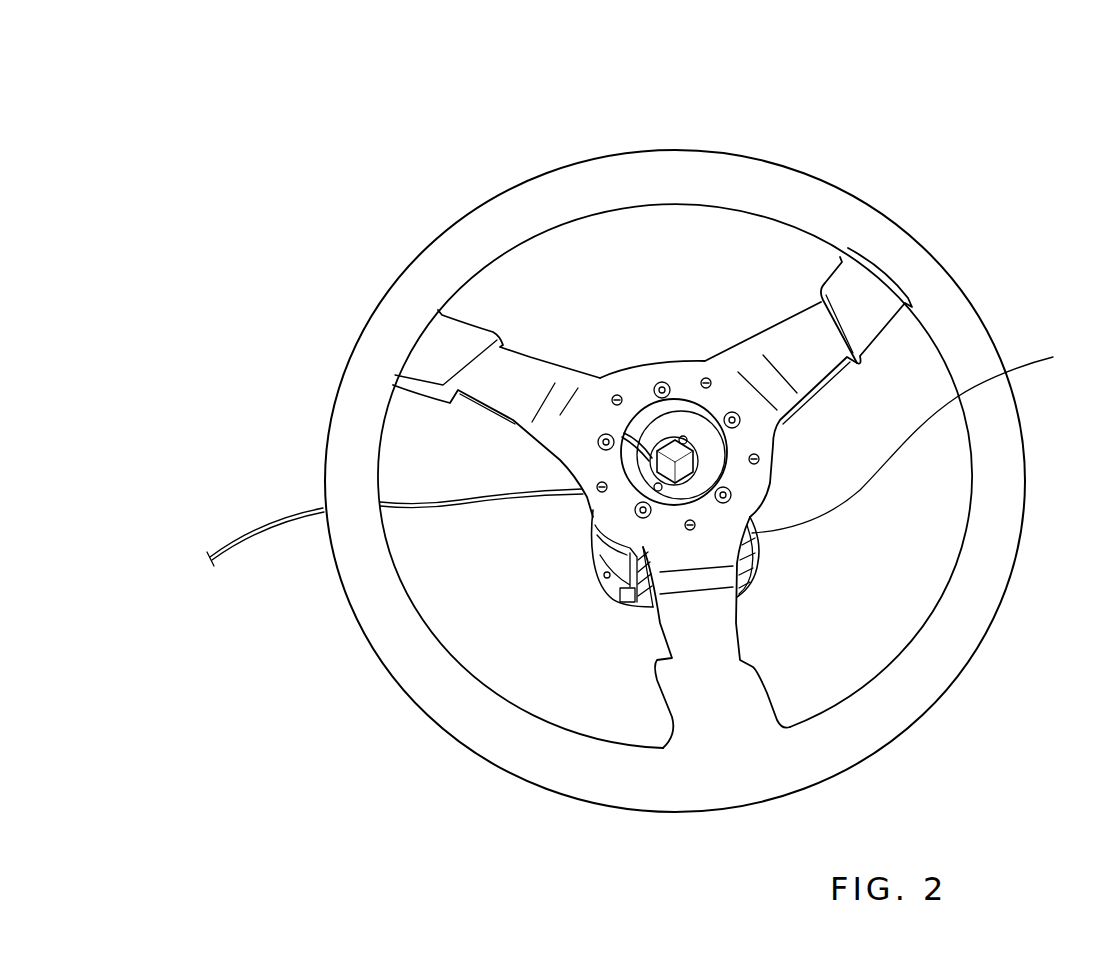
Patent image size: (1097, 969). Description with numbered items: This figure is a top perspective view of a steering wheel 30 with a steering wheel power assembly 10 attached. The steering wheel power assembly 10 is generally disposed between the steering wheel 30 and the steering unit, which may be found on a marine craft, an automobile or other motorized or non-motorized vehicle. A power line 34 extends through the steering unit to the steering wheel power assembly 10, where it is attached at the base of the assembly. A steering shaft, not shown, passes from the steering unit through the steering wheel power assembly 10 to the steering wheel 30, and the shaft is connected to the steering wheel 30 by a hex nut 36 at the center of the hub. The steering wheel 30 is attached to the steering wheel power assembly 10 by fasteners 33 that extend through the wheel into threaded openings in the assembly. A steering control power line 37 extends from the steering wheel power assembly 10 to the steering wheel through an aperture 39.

The steering wheel power assembly 10 is at (916, 440).
The steering wheel 30 is at (888, 243).
The fasteners 33 is at (706, 378).
The power line 34 is at (260, 518).
The hex nut 36 is at (654, 478).
The steering control power line 37 is at (640, 441).
The aperture 39 is at (624, 435).